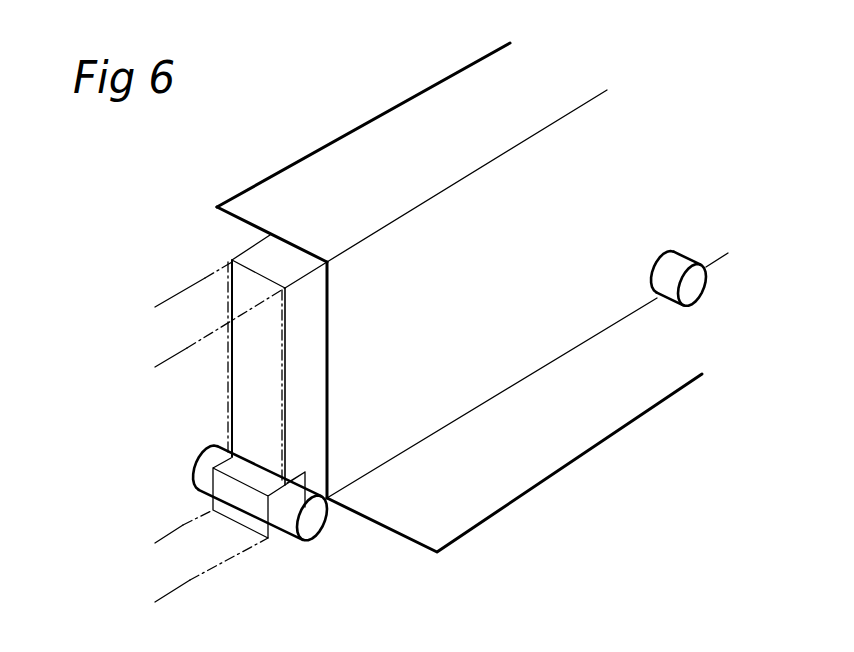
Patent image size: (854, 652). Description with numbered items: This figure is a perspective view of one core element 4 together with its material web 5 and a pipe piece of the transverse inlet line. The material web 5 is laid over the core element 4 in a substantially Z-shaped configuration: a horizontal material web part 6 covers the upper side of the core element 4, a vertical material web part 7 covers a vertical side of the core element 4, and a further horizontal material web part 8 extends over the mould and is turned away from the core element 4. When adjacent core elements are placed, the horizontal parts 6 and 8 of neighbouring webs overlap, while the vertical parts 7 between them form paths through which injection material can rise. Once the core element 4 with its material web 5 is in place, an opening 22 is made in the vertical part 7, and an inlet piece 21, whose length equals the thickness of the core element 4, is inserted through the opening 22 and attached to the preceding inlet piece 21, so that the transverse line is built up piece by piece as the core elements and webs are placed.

The core element 4 is at (232, 258).
The material web 5 is at (472, 278).
The material web part 6 is at (383, 141).
The material web part 7 is at (555, 173).
The material web part 8 is at (538, 458).
The inlet piece 21 is at (682, 262).
The opening 22 is at (660, 257).